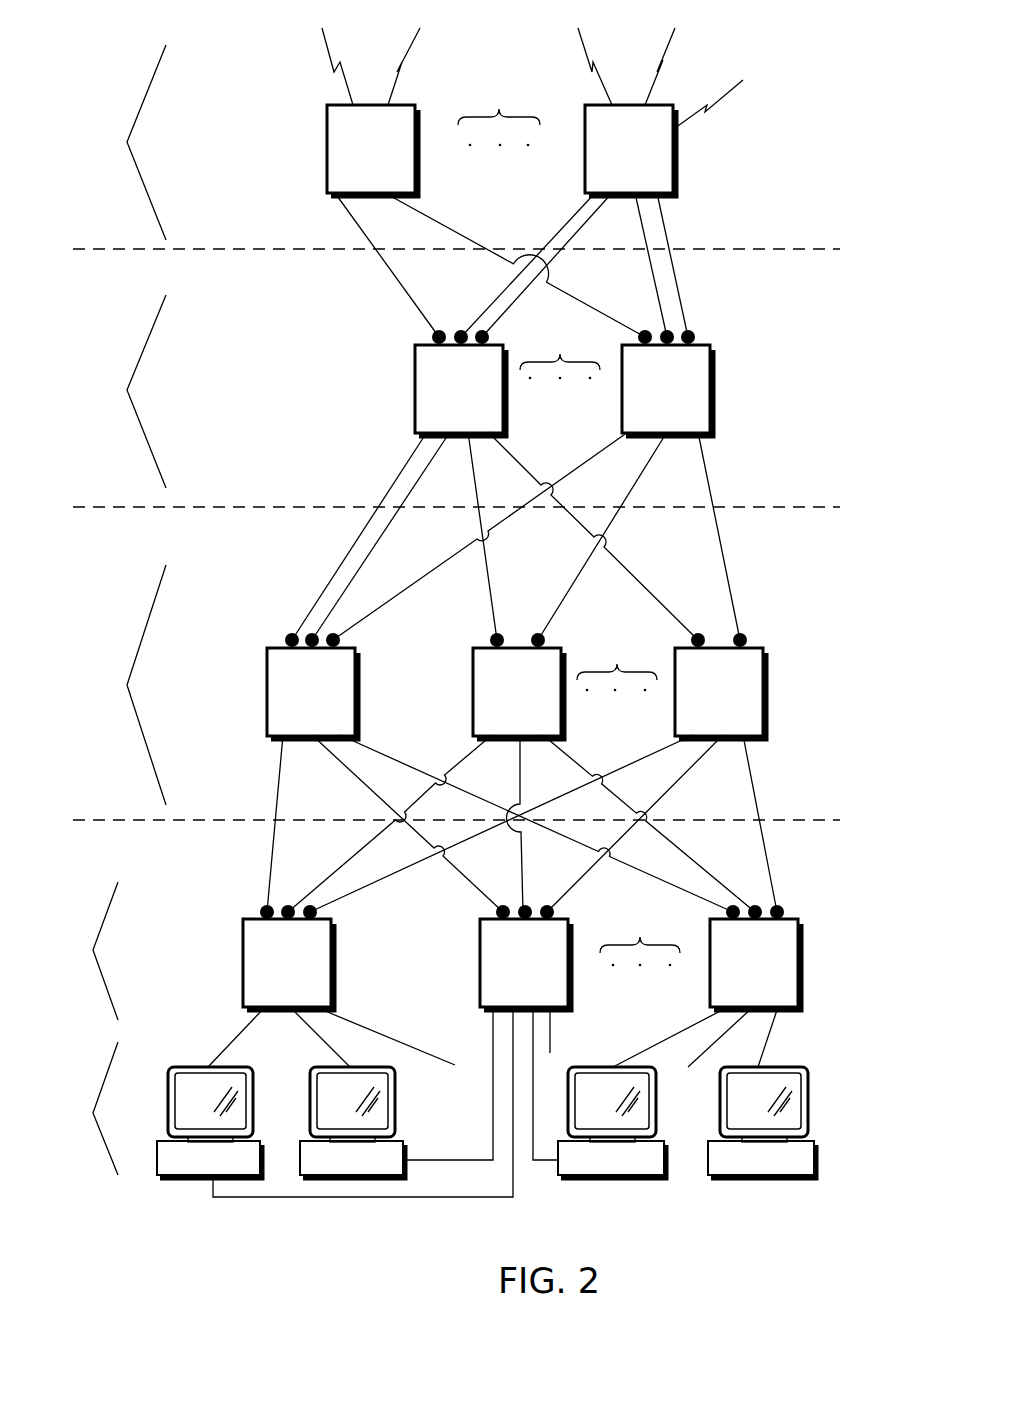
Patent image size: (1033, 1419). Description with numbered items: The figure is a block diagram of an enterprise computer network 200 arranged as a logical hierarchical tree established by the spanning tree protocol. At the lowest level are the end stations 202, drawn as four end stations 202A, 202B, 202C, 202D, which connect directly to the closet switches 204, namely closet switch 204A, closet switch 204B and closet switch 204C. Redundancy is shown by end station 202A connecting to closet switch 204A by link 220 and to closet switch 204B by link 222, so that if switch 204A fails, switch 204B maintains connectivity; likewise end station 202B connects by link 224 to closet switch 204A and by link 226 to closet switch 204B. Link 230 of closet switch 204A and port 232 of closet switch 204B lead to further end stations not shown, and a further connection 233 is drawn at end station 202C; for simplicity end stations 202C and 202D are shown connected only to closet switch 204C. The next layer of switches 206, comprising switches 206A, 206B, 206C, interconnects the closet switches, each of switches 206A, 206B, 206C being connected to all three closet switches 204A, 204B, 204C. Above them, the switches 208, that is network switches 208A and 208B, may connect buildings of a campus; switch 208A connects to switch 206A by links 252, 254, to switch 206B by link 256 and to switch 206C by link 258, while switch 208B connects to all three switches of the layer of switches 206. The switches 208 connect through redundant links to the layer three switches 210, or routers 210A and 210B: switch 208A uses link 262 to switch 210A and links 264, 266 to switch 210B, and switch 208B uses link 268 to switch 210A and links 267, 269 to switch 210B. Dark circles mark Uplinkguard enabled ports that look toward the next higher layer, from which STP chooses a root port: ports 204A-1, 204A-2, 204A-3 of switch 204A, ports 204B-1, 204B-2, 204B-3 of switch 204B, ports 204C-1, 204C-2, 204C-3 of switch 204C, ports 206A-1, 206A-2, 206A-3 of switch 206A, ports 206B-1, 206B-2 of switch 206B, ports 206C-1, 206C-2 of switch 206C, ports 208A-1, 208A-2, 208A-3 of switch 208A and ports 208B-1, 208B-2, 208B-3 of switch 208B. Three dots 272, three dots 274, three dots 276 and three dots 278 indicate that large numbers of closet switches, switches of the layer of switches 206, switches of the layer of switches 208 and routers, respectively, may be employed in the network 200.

The network 200 is at (748, 30).
The end stations 202 is at (93, 1113).
The end station 202A is at (170, 1178).
The end station 202B is at (413, 1152).
The end station 202C is at (628, 1180).
The end station 202D is at (778, 1180).
The closet switches 204 is at (93, 950).
The closet switch 204A is at (243, 965).
The closet switch 204B is at (480, 973).
The closet switch 204C is at (799, 962).
The port 204A-1 is at (262, 907).
The port 204A-2 is at (288, 904).
The port 204A-3 is at (317, 912).
The port 204B-1 is at (497, 912).
The port 204B-2 is at (518, 906).
The port 204B-3 is at (545, 905).
The port 204C-1 is at (727, 910).
The port 204C-2 is at (752, 905).
The port 204C-3 is at (800, 895).
The switches 206 is at (127, 685).
The switch 206A is at (267, 708).
The switch 206B is at (565, 720).
The switch 206C is at (765, 690).
The port 206A-1 is at (287, 637).
The port 206A-2 is at (311, 633).
The port 206A-3 is at (340, 643).
The port 206B-1 is at (499, 636).
The port 206B-2 is at (545, 638).
The port 206C-1 is at (699, 636).
The port 206C-2 is at (746, 639).
The switches 208 is at (127, 390).
The network switch 208A is at (415, 380).
The network switch 208B is at (712, 388).
The port 208A-1 is at (432, 336).
The port 208A-2 is at (461, 329).
The port 208A-3 is at (489, 334).
The port 208B-1 is at (720, 330).
The port 208B-2 is at (667, 337).
The port 208B-3 is at (688, 337).
The layer 3 network switches 210 is at (127, 142).
The layer 3 switch 210A is at (326, 143).
The layer 3 switch 210B is at (675, 143).
The link 220 is at (232, 1043).
The link 222 is at (442, 1199).
The link 224 is at (314, 1038).
The link 226 is at (490, 1031).
The link 230 is at (412, 1052).
The port 232 is at (553, 1030).
The link 233 is at (543, 1162).
The link 252 is at (402, 484).
The link 254 is at (410, 497).
The link 256 is at (479, 497).
The link 258 is at (531, 474).
The link 262 is at (357, 227).
The link 264 is at (563, 225).
The link 266 is at (552, 264).
The link 267 is at (665, 223).
The link 268 is at (436, 223).
The link 269 is at (641, 223).
The three dots 272 is at (640, 940).
The three dots 274 is at (617, 665).
The three dots 276 is at (560, 353).
The three dots 278 is at (499, 115).